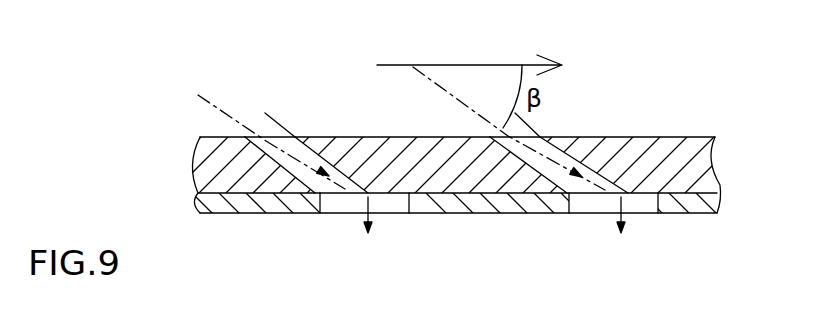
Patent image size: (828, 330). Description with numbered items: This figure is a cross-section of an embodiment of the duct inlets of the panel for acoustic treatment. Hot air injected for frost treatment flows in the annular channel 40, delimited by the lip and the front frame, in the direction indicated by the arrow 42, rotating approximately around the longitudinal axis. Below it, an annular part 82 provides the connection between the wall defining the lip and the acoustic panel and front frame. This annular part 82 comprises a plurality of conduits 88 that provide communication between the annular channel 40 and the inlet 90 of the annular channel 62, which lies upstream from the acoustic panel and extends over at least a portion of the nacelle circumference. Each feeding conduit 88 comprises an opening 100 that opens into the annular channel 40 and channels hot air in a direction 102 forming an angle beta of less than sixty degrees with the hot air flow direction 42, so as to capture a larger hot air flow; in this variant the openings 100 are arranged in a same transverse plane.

The annular channel 40 is at (181, 49).
The hot air flow direction 42 is at (477, 65).
The annular channel 62 is at (494, 227).
The annular part 82 is at (418, 194).
The conduits 88 is at (246, 137).
The inlet 90 is at (330, 207).
The opening 100 is at (499, 137).
The channeling direction 102 is at (440, 86).